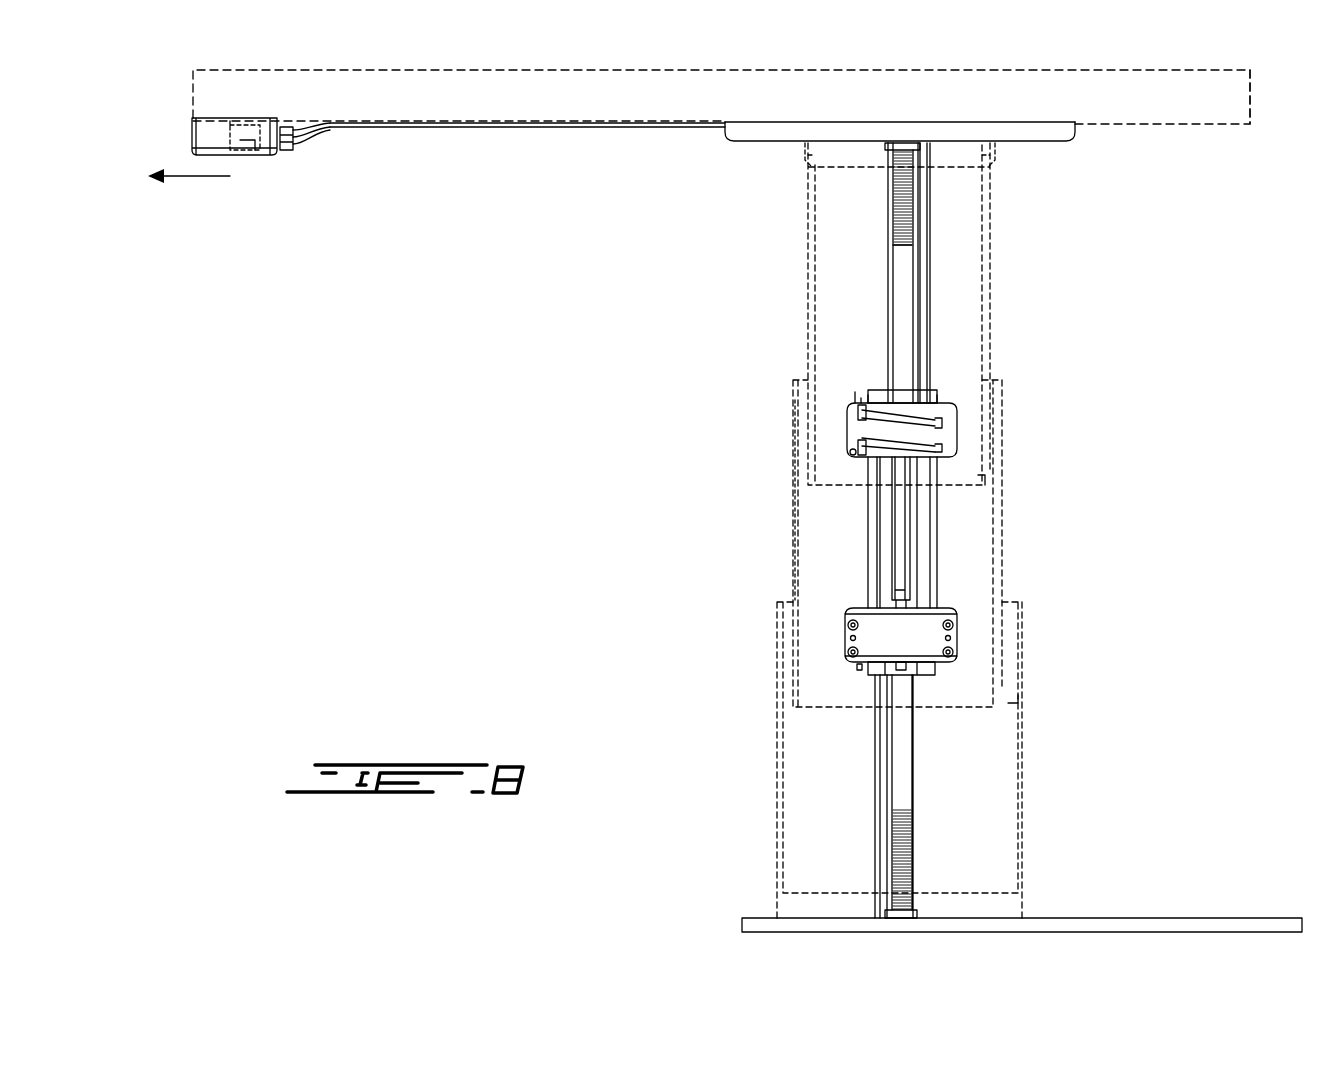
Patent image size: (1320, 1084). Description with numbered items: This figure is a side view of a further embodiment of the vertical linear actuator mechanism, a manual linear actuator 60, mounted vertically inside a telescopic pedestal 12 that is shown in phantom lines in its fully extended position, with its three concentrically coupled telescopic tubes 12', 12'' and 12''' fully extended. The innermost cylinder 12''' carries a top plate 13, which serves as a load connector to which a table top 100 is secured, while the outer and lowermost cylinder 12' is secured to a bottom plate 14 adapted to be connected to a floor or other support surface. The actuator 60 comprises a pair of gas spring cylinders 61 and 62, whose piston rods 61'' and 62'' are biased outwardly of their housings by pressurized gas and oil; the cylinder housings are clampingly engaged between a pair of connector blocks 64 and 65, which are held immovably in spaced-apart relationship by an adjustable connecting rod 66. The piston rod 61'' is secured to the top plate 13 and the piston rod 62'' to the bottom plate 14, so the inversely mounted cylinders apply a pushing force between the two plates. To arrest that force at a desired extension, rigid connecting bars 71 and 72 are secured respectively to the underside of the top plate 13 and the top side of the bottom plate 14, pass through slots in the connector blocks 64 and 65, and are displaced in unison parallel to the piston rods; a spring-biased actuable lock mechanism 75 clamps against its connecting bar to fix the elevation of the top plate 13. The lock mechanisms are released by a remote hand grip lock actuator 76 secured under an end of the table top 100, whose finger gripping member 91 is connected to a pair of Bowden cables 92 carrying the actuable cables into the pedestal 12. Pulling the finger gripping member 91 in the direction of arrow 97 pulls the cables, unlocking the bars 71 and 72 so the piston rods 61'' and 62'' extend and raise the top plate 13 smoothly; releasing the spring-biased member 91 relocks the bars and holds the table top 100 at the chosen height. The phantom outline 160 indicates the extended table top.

The telescopic pedestal assembly 12 is at (1158, 713).
The outer and lowermost cylinder 12' is at (945, 760).
The intermediate cylinder 12'' is at (969, 543).
The innermost cylinder 12''' is at (957, 314).
The top plate 13 is at (858, 132).
The bottom plate 14 is at (1145, 918).
The manual linear actuator 60 is at (858, 540).
The gas spring cylinder 61 is at (957, 532).
The piston rod 61'' is at (943, 273).
The gas spring cylinder 62 is at (846, 532).
The piston rod 62'' is at (845, 796).
The connector block 64 is at (945, 430).
The connector block 65 is at (935, 635).
The adjustable connecting rod 66 is at (905, 513).
The connecting bar 71 is at (888, 262).
The connecting bar 72 is at (900, 763).
The actuable lock mechanism 75 is at (882, 392).
The hand grip lock actuator 76 is at (190, 130).
The finger gripping member 91 is at (255, 145).
The Bowden cables 92 is at (335, 127).
The arrow 97 is at (195, 178).
The table top 100 is at (1200, 125).
The extended table top position 160 is at (245, 70).